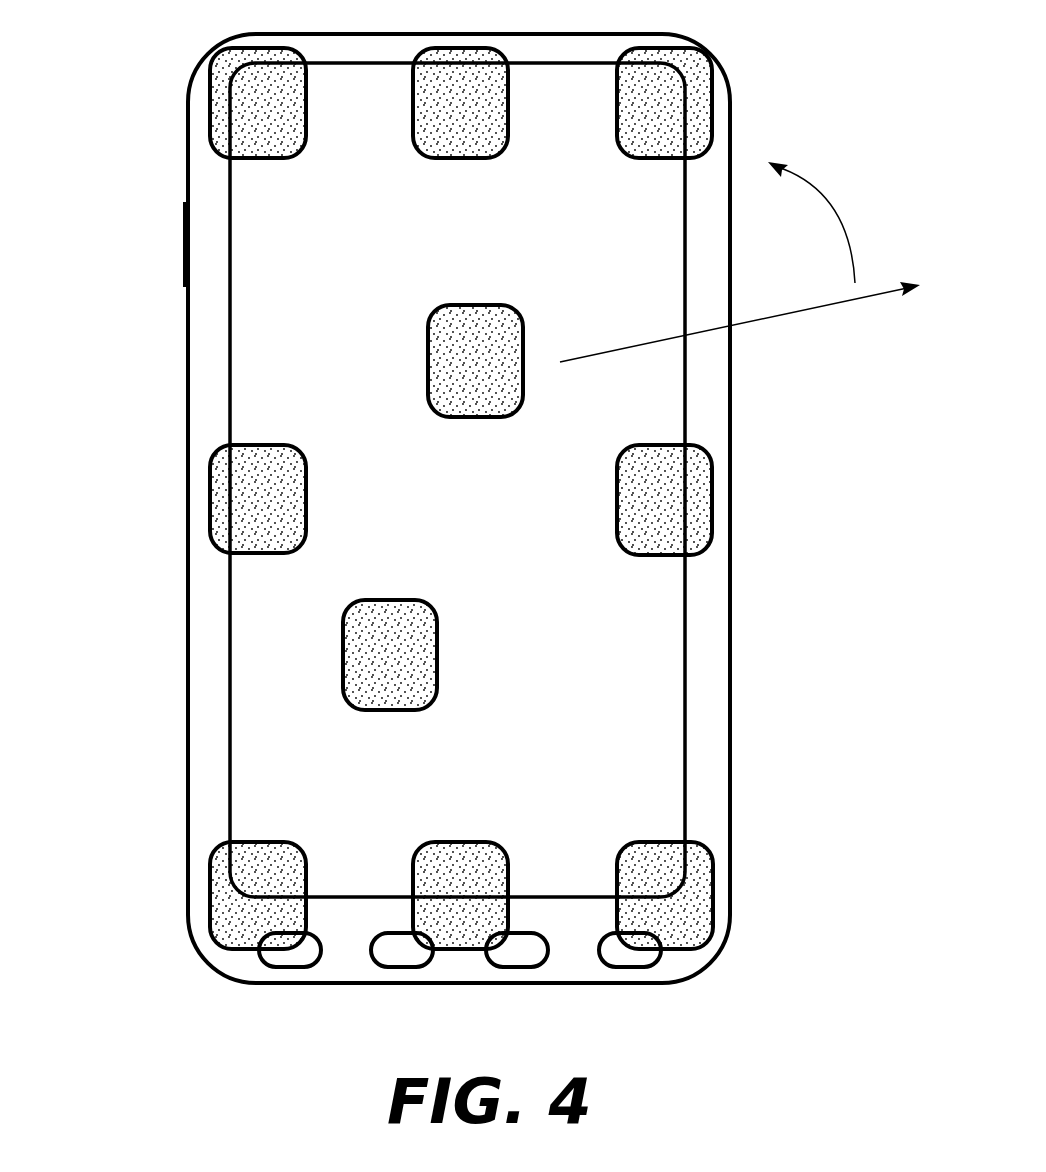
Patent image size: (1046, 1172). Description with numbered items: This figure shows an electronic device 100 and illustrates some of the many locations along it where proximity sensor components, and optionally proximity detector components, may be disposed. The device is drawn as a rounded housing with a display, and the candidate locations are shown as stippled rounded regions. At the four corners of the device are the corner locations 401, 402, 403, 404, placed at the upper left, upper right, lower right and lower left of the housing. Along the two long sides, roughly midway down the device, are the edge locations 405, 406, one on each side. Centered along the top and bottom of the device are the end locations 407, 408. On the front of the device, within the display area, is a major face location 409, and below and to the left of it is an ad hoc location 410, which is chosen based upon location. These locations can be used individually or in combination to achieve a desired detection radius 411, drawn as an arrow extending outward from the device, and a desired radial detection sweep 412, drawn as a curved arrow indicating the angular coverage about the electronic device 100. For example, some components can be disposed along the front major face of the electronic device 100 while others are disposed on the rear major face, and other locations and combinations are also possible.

The electronic device 100 is at (148, 373).
The corner location 401 is at (262, 160).
The corner location 402 is at (660, 160).
The corner location 403 is at (660, 842).
The corner location 404 is at (210, 896).
The edge location 405 is at (660, 557).
The edge location 406 is at (210, 500).
The end location 407 is at (460, 160).
The end location 408 is at (460, 842).
The major face location 409 is at (428, 362).
The ad hoc location 410 is at (343, 657).
The detection radius 411 is at (777, 315).
The radial detection sweep 412 is at (825, 207).